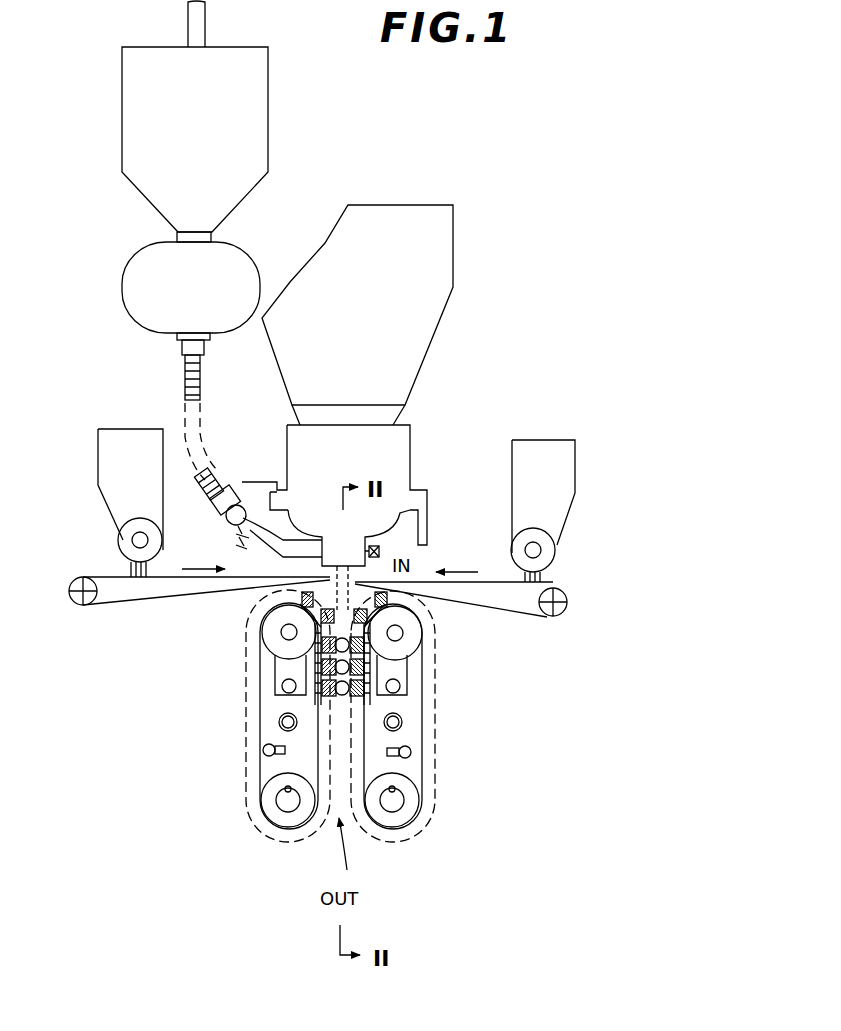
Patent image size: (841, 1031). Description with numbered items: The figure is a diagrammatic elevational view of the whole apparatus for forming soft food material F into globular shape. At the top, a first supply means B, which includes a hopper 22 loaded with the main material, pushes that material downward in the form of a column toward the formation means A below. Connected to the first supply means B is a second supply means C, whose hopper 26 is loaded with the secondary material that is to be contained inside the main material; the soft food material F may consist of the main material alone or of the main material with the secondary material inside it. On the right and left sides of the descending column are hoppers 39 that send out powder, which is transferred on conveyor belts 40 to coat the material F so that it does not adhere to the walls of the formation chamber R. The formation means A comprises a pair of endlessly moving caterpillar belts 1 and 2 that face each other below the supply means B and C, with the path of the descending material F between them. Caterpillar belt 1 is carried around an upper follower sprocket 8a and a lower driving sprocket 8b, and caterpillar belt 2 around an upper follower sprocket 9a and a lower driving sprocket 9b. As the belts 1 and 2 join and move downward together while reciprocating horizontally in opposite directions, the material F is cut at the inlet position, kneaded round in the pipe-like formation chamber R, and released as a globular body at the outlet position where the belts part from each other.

The hopper 26 is at (250, 103).
The hopper 22 is at (418, 330).
The hoppers 39 is at (112, 453).
The conveyor belts 40 is at (155, 593).
The upper follower sprocket 8a is at (275, 610).
The lower driving sprocket 8b is at (287, 818).
The upper follower sprocket 9a is at (410, 633).
The lower driving sprocket 9b is at (400, 817).
The caterpillar belt 1 is at (260, 697).
The caterpillar belt 2 is at (422, 768).
The formation means A is at (236, 746).
The first supply means B is at (450, 200).
The second supply means C is at (105, 155).
The soft food material F is at (330, 573).
The formation chamber R is at (337, 705).